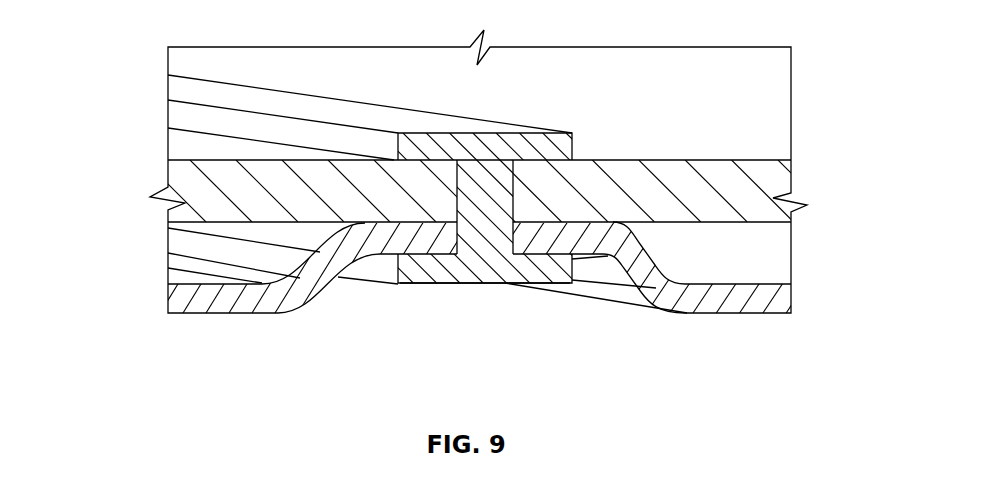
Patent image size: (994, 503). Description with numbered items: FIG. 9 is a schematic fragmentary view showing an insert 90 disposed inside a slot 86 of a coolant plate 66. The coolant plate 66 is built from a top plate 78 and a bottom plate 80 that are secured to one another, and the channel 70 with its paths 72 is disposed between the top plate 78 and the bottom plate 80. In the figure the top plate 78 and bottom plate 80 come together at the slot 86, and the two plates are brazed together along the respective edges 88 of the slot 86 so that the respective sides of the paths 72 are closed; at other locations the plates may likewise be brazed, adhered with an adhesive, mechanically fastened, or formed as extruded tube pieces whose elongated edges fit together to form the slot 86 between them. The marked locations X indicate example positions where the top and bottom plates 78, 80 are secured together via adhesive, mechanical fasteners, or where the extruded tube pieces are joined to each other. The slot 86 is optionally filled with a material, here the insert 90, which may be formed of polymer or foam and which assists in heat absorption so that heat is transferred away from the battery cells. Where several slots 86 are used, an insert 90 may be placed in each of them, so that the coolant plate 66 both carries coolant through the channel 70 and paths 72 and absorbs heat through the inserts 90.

The coolant plate 66 is at (448, 219).
The top plate 78 is at (187, 178).
The channel 70 is at (476, 254).
The paths 72 is at (187, 248).
The bottom plate 80 is at (187, 302).
The slot 86 is at (457, 184).
The edges of the slot 88 is at (445, 220).
The insert 90 is at (473, 282).
The locations X is at (428, 220).